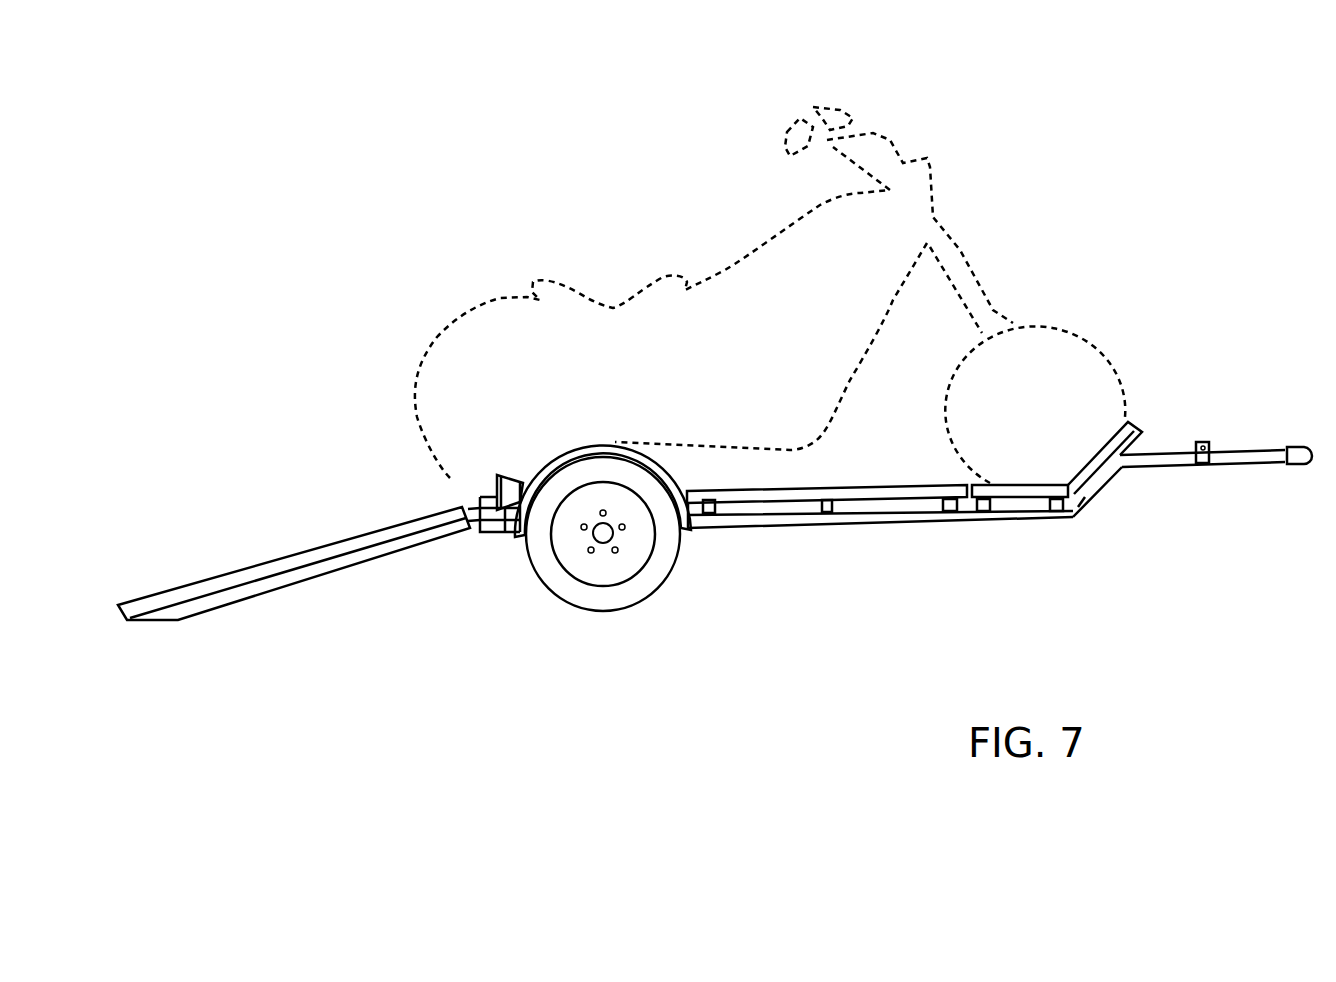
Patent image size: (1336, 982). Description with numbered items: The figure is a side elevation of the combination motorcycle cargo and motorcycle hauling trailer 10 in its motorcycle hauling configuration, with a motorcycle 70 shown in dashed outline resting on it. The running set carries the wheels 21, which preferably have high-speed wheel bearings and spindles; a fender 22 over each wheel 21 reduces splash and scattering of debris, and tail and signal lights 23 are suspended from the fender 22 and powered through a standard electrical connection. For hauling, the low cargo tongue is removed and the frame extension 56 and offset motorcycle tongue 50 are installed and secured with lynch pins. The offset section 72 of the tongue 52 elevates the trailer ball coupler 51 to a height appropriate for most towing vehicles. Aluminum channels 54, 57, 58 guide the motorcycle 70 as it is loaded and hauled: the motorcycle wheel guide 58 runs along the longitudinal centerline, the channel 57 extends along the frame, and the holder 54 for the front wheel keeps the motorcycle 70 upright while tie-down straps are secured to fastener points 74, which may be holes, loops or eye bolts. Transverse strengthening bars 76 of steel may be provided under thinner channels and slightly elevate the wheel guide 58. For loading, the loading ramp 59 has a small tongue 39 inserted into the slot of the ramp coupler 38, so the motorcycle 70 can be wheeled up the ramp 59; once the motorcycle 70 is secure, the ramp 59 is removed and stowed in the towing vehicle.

The combination motorcycle cargo and motorcycle hauling trailer 10 is at (1172, 295).
The wheel 21 is at (636, 598).
The fender 22 is at (690, 528).
The tail and signal lights 23 is at (507, 533).
The ramp coupler 38 is at (470, 510).
The small tongue 39 is at (468, 505).
The offset motorcycle tongue 50 is at (1028, 521).
The trailer ball coupler 51 is at (1297, 465).
The tongue 52 is at (1250, 450).
The holder for the front wheel 54 is at (1132, 419).
The frame extension 56 is at (782, 526).
The aluminum channel 57 is at (914, 487).
The motorcycle wheel guide 58 is at (485, 533).
The loading ramp 59 is at (262, 565).
The motorcycle 70 is at (890, 140).
The offset section 72 is at (1100, 487).
The fastener point 74 is at (1203, 442).
The transverse strengthening bar 76 is at (838, 515).